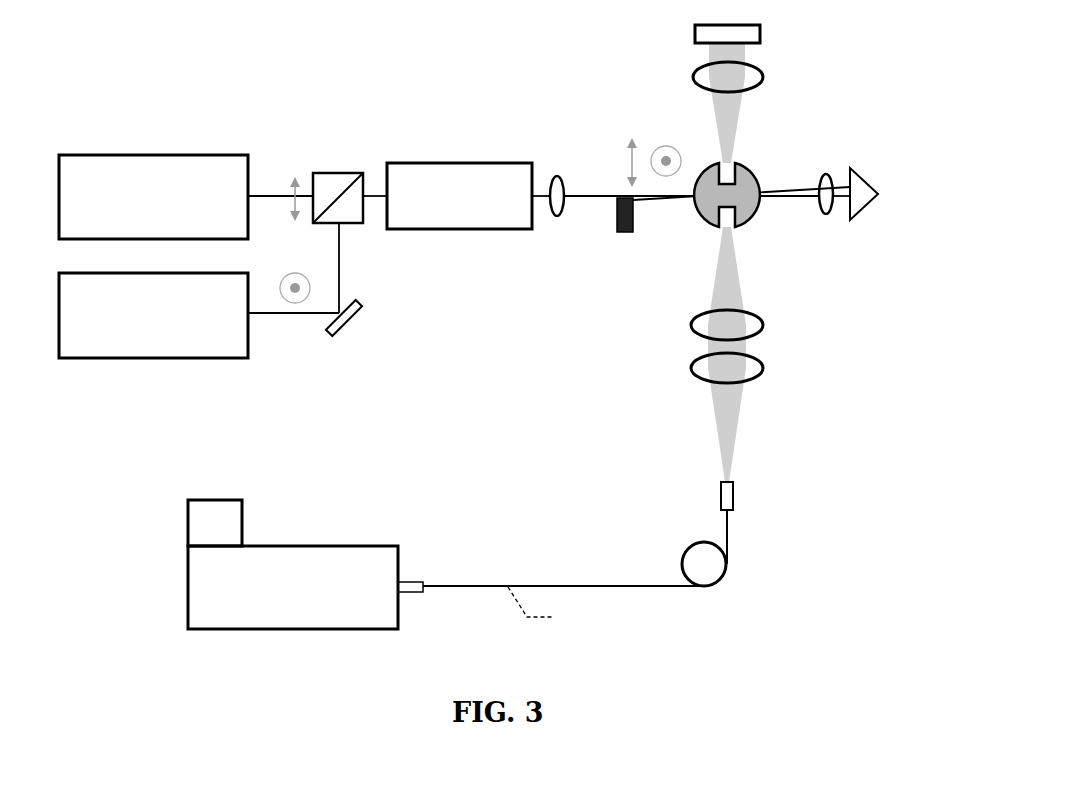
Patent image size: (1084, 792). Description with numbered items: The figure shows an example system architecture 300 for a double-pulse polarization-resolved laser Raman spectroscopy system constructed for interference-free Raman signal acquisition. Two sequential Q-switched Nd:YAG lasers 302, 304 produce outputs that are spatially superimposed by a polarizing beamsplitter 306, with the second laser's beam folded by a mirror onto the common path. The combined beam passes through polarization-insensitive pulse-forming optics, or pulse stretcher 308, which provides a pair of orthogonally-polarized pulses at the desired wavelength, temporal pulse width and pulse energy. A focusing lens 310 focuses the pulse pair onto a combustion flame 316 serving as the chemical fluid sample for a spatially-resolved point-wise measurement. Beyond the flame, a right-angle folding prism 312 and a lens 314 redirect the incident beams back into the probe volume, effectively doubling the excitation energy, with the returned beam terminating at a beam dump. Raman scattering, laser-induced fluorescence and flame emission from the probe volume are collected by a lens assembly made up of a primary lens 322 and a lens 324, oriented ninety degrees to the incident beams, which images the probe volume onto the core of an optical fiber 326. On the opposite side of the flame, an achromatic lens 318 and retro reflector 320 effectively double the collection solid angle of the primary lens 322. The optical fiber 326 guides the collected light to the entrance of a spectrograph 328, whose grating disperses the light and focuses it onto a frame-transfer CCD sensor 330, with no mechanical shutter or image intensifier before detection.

The system architecture 300 is at (872, 33).
The Q-switched Nd:YAG laser 302 is at (143, 155).
The Q-switched Nd:YAG laser 304 is at (143, 273).
The polarizing beamsplitter 306 is at (320, 173).
The pulse stretcher 308 is at (418, 163).
The focusing lens 310 is at (556, 176).
The right-angle folding prism 312 is at (878, 182).
The lens 314 is at (829, 174).
The combustion flame 316 is at (753, 173).
The achromatic lens 318 is at (693, 72).
The retro reflector 320 is at (694, 32).
The primary lens 322 is at (757, 314).
The lens 324 is at (756, 380).
The optical fiber 326 is at (684, 550).
The spectrograph 328 is at (398, 548).
The frame-transfer CCD sensor 330 is at (242, 502).